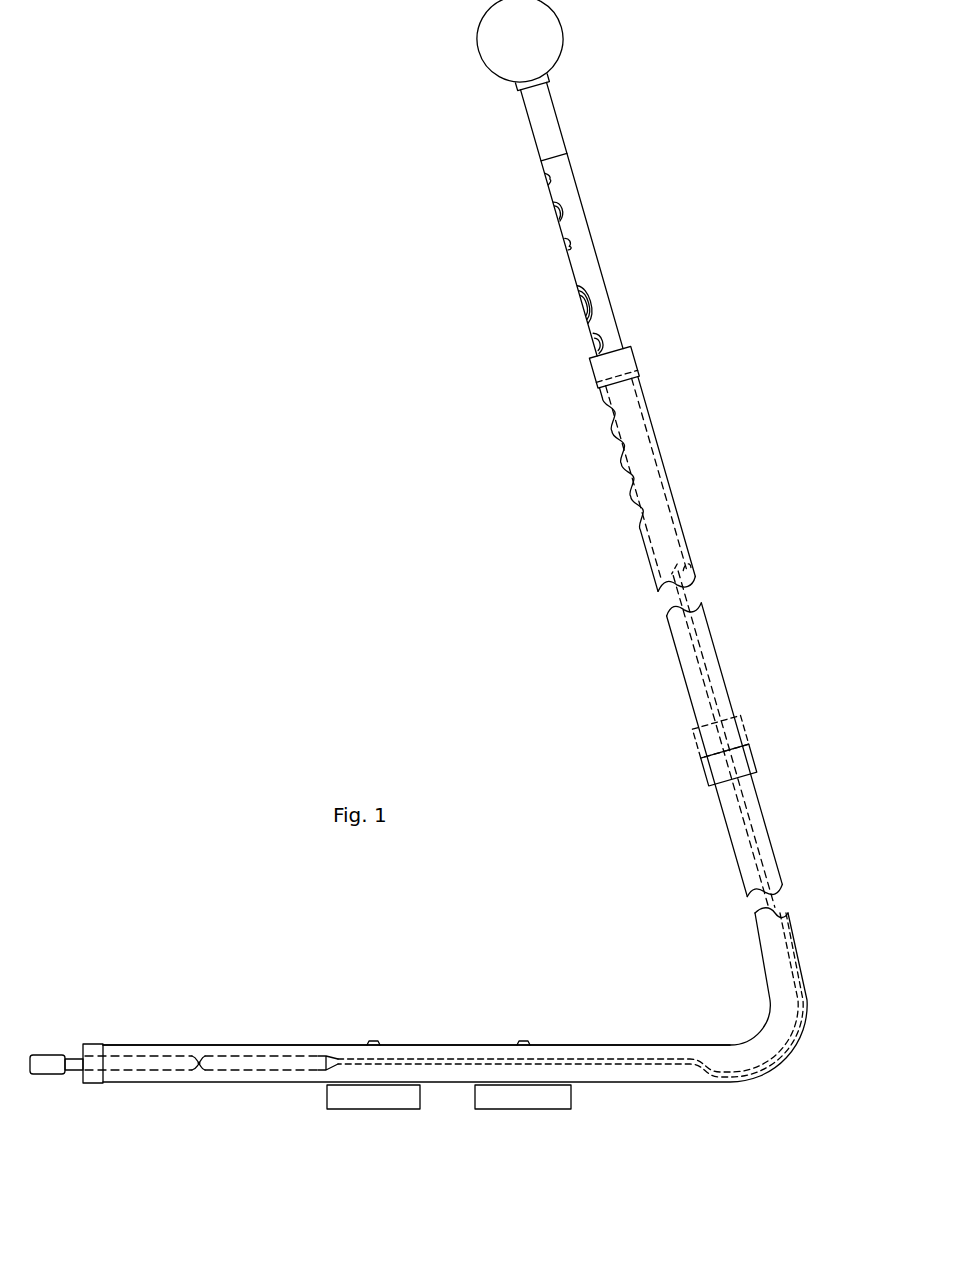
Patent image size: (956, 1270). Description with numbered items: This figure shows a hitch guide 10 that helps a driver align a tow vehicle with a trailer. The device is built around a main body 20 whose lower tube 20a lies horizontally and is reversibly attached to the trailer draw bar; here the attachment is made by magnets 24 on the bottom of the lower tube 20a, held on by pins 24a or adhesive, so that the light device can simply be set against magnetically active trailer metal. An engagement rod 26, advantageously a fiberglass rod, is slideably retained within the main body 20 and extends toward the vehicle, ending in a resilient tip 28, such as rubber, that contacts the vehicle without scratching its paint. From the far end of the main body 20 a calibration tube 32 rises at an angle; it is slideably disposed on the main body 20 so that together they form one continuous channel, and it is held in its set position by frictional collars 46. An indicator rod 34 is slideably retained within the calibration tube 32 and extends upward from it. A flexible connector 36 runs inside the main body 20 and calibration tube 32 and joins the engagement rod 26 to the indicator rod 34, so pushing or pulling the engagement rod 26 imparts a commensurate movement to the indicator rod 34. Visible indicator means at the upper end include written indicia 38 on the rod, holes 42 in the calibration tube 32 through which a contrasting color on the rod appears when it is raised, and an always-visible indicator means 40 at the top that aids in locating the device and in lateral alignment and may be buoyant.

The hitch guide 10 is at (393, 374).
The main body 20 is at (298, 1027).
The lower tube 20a is at (584, 1044).
The magnets 24 is at (507, 1095).
The pins 24a is at (372, 1040).
The engagement rod 26 is at (78, 1065).
The tip 28 is at (50, 1065).
The calibration tube 32 is at (658, 578).
The indicator rod 34 is at (535, 146).
The flexible connector 36 is at (655, 1063).
The written indicia 38 is at (548, 233).
The indicator means 40 is at (497, 50).
The holes 42 is at (605, 457).
The collars 46 is at (608, 376).